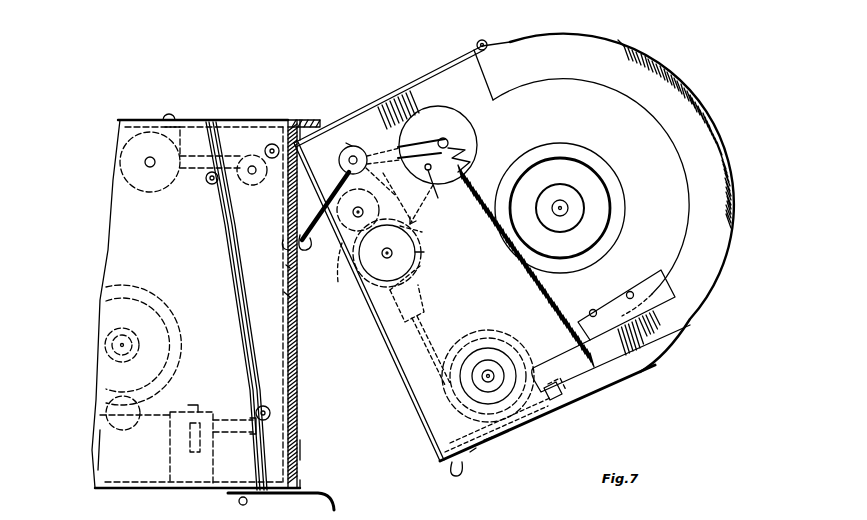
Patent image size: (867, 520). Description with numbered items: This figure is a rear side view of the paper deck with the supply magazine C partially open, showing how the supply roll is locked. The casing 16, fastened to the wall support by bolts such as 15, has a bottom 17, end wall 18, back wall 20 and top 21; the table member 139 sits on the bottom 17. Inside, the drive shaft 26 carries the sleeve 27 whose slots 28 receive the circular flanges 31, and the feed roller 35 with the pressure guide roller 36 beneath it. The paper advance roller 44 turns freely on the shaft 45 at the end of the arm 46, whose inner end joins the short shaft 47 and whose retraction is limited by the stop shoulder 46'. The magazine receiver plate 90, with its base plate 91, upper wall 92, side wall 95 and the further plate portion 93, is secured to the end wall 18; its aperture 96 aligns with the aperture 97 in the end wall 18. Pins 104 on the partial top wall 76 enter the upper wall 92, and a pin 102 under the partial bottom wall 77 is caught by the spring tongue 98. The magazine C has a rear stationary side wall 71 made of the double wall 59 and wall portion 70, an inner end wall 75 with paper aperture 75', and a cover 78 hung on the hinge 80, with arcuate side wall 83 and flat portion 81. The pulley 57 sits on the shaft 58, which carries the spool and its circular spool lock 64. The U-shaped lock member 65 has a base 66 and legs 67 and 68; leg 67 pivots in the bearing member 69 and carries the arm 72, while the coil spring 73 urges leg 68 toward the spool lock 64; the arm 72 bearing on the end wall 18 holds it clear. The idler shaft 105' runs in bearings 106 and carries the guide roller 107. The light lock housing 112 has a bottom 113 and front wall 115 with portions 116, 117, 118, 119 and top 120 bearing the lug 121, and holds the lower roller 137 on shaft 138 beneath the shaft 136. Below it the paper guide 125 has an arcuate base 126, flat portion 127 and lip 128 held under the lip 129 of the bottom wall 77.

The back wall 20 is at (130, 247).
The top 21 is at (192, 125).
The end wall 18 is at (282, 305).
The bottom 17 is at (156, 489).
The casing 16 is at (96, 461).
The paper advance roller 44 is at (132, 190).
The shaft 45 is at (148, 163).
The stop shoulder 46' is at (178, 113).
The arm 46 is at (223, 157).
The short shaft 47 is at (268, 146).
The lug 121 is at (283, 195).
The circular flange 31 is at (176, 318).
The paper feed roller 35 is at (142, 345).
The drive shaft 26 is at (118, 346).
The sleeve 27 is at (115, 358).
The pressure guide roller 36 is at (150, 409).
The table member 139 is at (172, 417).
The bolt 15 is at (290, 121).
The magazine receiver plate 90 is at (306, 406).
The upper wall 92 is at (312, 121).
The pin 104 is at (318, 119).
The side wall 95 is at (298, 450).
The lower hinge end 93 is at (295, 487).
The spring tongue 98 is at (320, 500).
The paper receiving aperture 96 is at (284, 245).
The aperture 97 is at (286, 267).
The flat base plate portion 91 is at (287, 296).
The partial top wall 76 is at (372, 102).
The inner end wall 75 is at (474, 301).
The paper aperture 75' is at (336, 265).
The horizontal top portion 120 is at (356, 146).
The leg portion 67 is at (339, 157).
The bearing member 69 is at (348, 142).
The rear stationary side wall 71 is at (340, 129).
The arm 72 is at (312, 240).
The second arcuate portion 119 is at (376, 152).
The wall portion 70 is at (390, 182).
The shaft 136 is at (358, 210).
The shaft 138 is at (387, 253).
The arcuate portion 117 is at (399, 197).
The outer front wall 115 is at (421, 204).
The upright flat portion 116 is at (424, 232).
The light lock housing 112 is at (424, 252).
The lower roller 137 is at (424, 266).
The bottom portion 113 is at (420, 295).
The paper guide 125 is at (435, 372).
The flat portion 127 is at (430, 332).
The arcuate base portion 126 is at (445, 424).
The paper guide roller 107 is at (481, 344).
The idler shaft 105' is at (492, 374).
The bearing 106 is at (484, 392).
The pin 102 is at (449, 478).
The flat portion 81 is at (480, 441).
The partial bottom wall 77 is at (490, 440).
The leg portion 68 is at (446, 138).
The base portion 66 is at (428, 140).
The lock member 65 is at (419, 130).
The coil spring 73 is at (470, 147).
The flat upright portion 118 is at (418, 163).
The circular spool lock 64 is at (439, 199).
The cover member 78 is at (747, 211).
The magazine C is at (712, 92).
The partial arcuate side wall portion 83 is at (718, 166).
The double wall 59 is at (530, 119).
The hinge 80 is at (485, 41).
The pulley 57 is at (613, 205).
The shaft 58 is at (558, 209).
The lip portion 128 is at (622, 326).
The slot 28 is at (561, 396).
The lip 129 is at (550, 388).